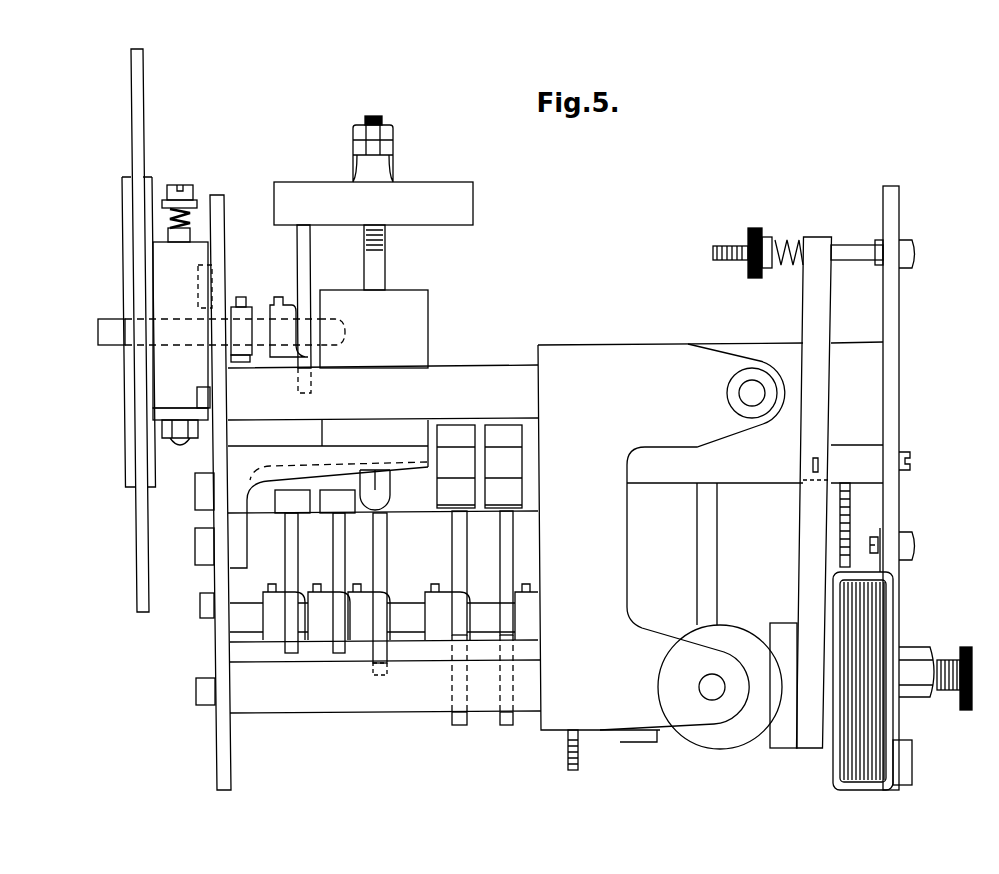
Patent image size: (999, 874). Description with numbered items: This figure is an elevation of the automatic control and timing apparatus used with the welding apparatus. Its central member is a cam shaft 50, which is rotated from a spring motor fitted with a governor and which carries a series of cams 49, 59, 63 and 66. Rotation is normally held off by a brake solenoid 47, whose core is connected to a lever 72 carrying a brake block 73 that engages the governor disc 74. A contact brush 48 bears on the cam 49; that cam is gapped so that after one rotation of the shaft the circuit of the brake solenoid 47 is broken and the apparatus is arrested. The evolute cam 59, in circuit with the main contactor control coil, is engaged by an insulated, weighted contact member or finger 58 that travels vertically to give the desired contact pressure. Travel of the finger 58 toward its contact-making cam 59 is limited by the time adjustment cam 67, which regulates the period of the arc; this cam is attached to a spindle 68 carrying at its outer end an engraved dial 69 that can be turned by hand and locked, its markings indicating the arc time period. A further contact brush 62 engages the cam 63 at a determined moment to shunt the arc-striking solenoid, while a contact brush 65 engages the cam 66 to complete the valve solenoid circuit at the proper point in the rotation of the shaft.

The brake solenoid 47 is at (858, 615).
The contact brush 48 is at (497, 425).
The cam 49 is at (517, 635).
The cam shaft 50 is at (411, 607).
The contact member or finger 58 is at (385, 265).
The evolute cam 59 is at (378, 665).
The contact brush 62 is at (345, 507).
The cam 63 is at (340, 725).
The contact brush 65 is at (297, 507).
The cam 66 is at (292, 722).
The time adjustment cam 67 is at (302, 252).
The spindle 68 is at (263, 328).
The engraved dial 69 is at (143, 505).
The lever 72 is at (818, 378).
The brake block 73 is at (790, 722).
The governor disc 74 is at (727, 730).